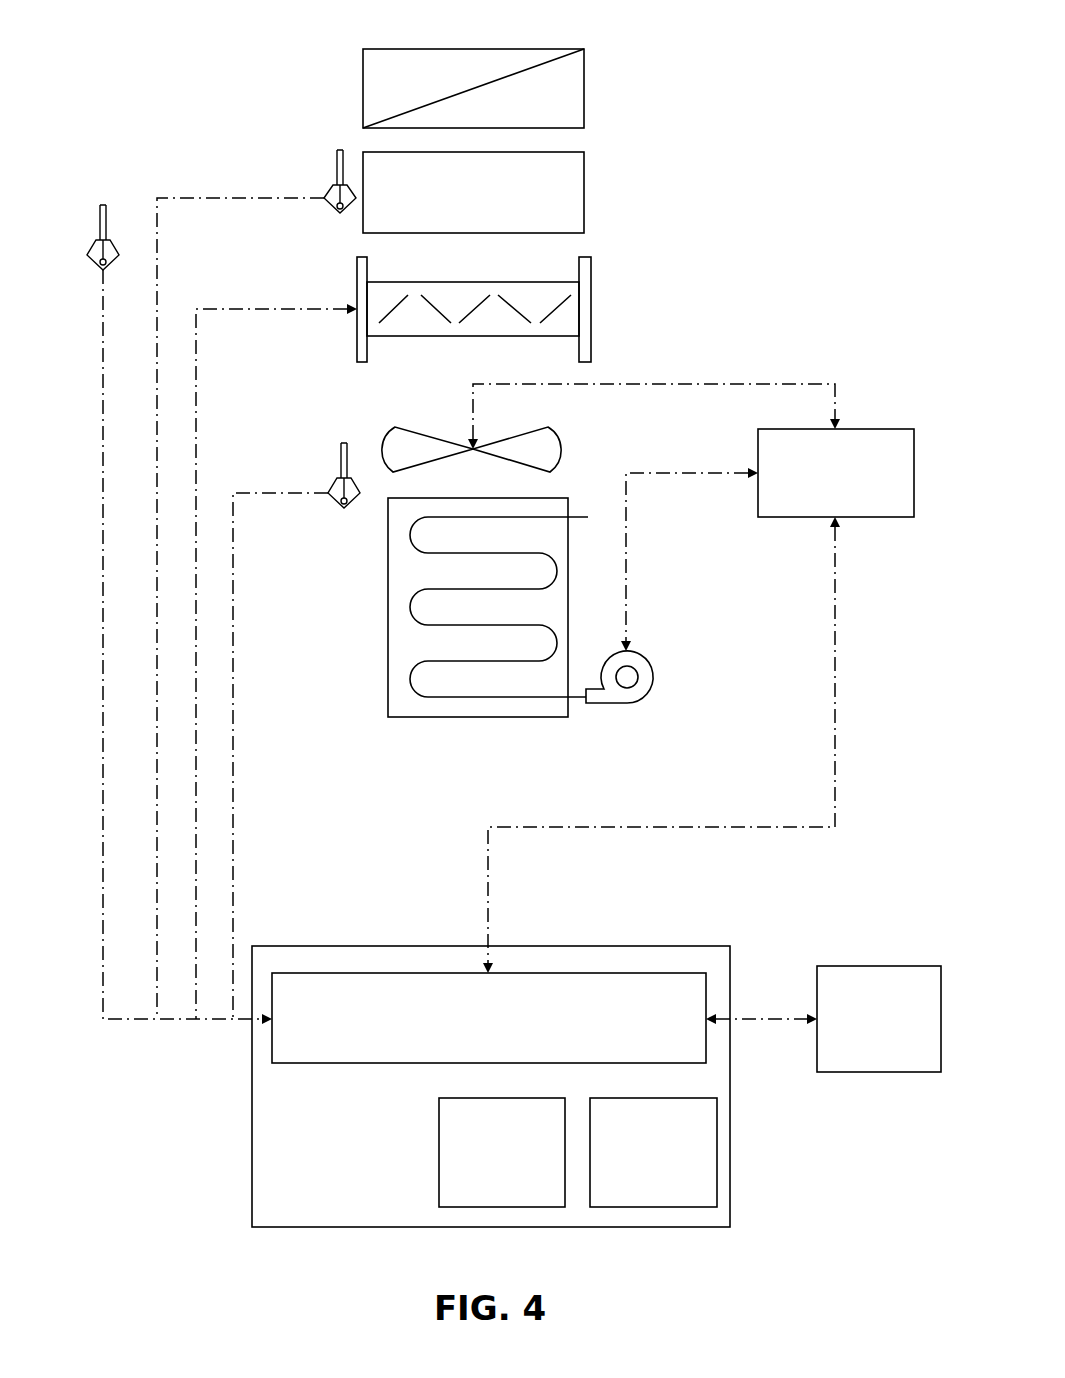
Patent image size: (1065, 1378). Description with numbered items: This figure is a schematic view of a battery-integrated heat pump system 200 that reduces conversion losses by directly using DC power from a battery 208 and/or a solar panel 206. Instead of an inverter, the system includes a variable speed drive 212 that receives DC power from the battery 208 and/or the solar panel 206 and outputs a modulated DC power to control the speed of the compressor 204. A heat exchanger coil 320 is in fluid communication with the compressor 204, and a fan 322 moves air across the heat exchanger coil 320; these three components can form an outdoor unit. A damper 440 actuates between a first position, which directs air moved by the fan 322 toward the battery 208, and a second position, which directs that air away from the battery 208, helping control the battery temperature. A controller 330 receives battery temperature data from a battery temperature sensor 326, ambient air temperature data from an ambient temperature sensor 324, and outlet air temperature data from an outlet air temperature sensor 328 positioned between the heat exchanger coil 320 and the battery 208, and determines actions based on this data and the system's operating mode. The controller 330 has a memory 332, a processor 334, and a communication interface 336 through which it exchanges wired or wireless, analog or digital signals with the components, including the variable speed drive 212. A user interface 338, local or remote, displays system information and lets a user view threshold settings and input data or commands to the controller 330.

The battery-integrated heat pump system 200 is at (192, 66).
The solar panel 206 is at (585, 80).
The battery 208 is at (454, 217).
The damper 440 is at (592, 308).
The battery temperature sensor 326 is at (337, 162).
The ambient temperature sensor 324 is at (100, 220).
The outlet air temperature sensor 328 is at (339, 453).
The fan 322 is at (383, 458).
The heat exchanger coil 320 is at (388, 614).
The compressor 204 is at (640, 703).
The variable speed drive 212 is at (817, 514).
The controller 330 is at (336, 1179).
The communication interface 336 is at (470, 1046).
The memory 332 is at (483, 1179).
The processor 334 is at (634, 1179).
The user interface 338 is at (860, 1059).